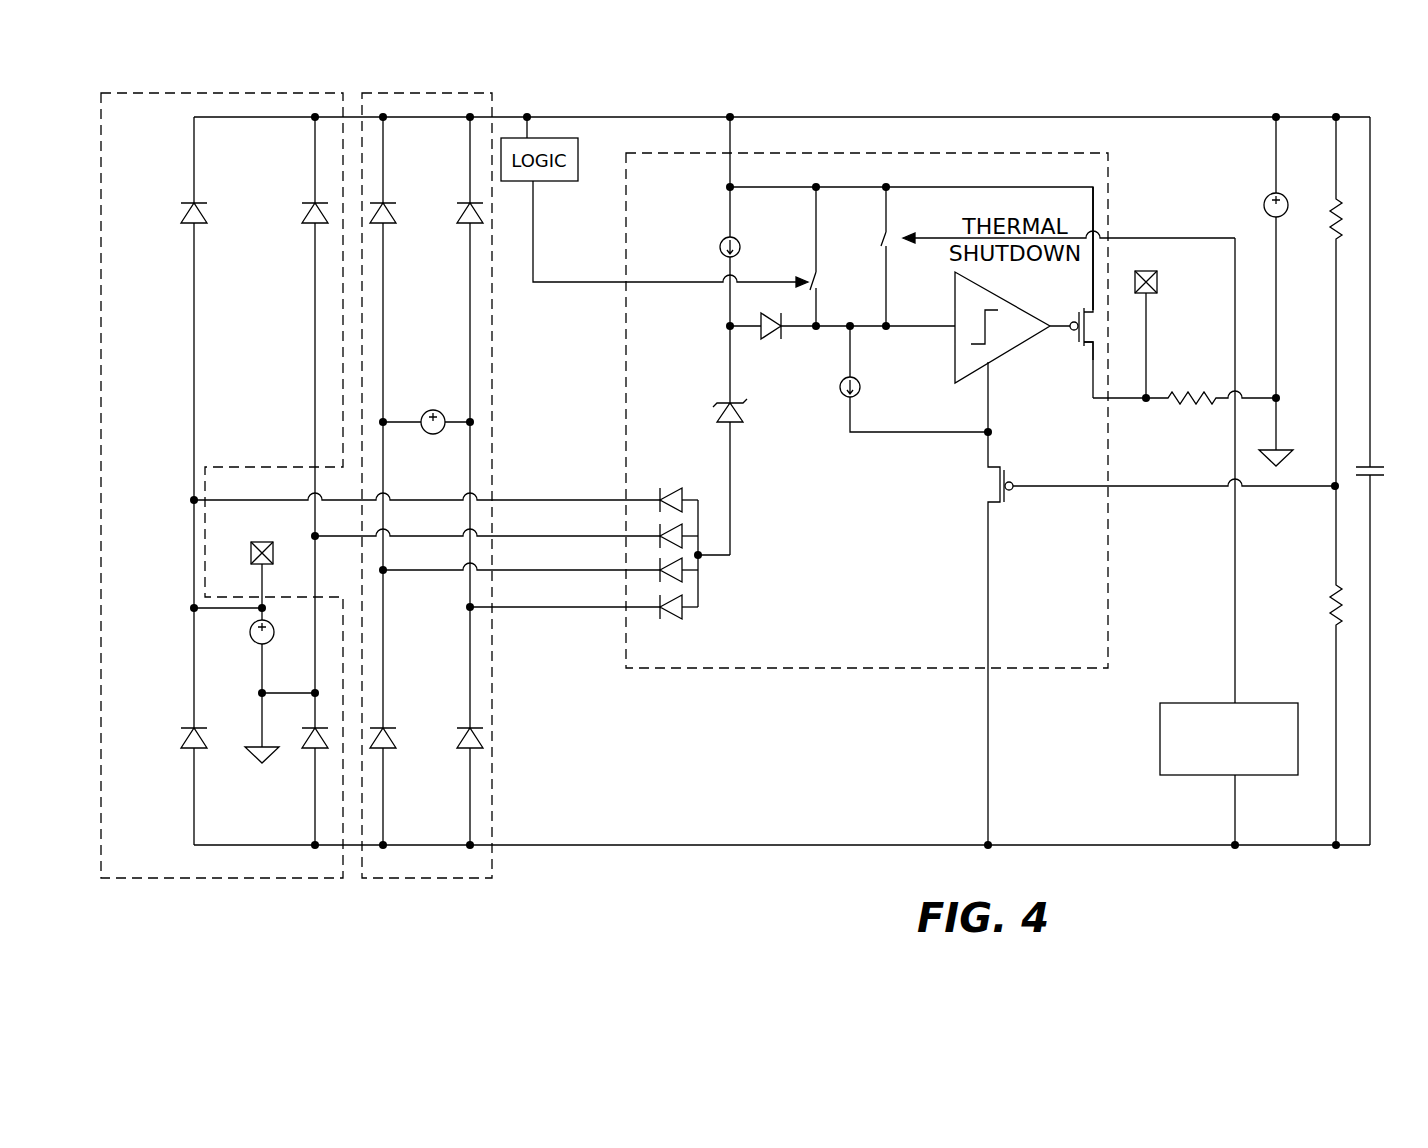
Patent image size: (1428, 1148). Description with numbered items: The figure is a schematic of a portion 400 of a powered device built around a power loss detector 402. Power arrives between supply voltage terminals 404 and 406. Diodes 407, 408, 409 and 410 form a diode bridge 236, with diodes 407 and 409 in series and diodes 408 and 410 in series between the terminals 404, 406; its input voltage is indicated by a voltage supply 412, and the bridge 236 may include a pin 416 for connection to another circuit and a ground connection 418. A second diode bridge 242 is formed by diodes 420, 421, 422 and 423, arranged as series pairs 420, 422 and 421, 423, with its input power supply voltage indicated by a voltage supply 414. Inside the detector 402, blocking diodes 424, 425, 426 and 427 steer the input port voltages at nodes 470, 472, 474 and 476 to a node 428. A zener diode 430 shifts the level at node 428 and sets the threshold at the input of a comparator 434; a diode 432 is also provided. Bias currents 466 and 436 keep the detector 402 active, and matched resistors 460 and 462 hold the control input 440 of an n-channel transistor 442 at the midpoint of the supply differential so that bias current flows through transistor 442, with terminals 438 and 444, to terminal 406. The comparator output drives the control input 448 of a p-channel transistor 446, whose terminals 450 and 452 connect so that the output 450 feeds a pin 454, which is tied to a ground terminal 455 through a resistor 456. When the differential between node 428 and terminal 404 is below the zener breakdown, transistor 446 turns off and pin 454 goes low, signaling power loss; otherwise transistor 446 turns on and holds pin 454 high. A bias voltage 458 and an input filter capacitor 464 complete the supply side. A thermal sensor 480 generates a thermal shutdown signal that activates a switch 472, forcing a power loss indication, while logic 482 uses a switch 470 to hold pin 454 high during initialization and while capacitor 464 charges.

The portion of a PD 400 is at (1095, 86).
The power loss detector 402 is at (822, 664).
The power supply voltage terminal 404 is at (255, 116).
The power supply voltage terminal 406 is at (757, 846).
The diode bridge 236 is at (190, 92).
The diode bridge 242 is at (406, 93).
The diode 407 is at (182, 214).
The diode 408 is at (304, 214).
The diode 409 is at (184, 745).
The diode 410 is at (322, 748).
The voltage supply 412 is at (254, 642).
The voltage supply 414 is at (424, 412).
The pin 416 is at (251, 553).
The ground connection 418 is at (262, 764).
The diode 420 is at (392, 214).
The diode 421 is at (459, 214).
The diode 422 is at (394, 745).
The diode 423 is at (482, 745).
The blocking diode 424 is at (674, 491).
The blocking diode 425 is at (684, 530).
The blocking diode 426 is at (700, 582).
The blocking diode 427 is at (672, 622).
The node 428 is at (700, 557).
The zener diode 430 is at (718, 410).
The diode 432 is at (781, 338).
The comparator 434 is at (955, 372).
The bias current 436 is at (840, 389).
The terminal 438 is at (992, 452).
The control input 440 is at (1040, 486).
The transistor 442 is at (1003, 505).
The terminal 444 is at (990, 525).
The transistor 446 is at (1070, 346).
The control input 448 is at (1068, 326).
The output 450 is at (1120, 400).
The terminal 452 is at (1095, 276).
The pin 454 is at (1158, 283).
The ground terminal 455 is at (1312, 438).
The resistor 456 is at (1210, 410).
The bias voltage 458 is at (1262, 203).
The matched resistor 460 is at (1330, 210).
The matched resistor 462 is at (1325, 626).
The input filter capacitor 464 is at (1385, 467).
The bias current 466 is at (740, 248).
The switch 470 is at (190, 501).
The switch 472 is at (313, 536).
The node 474 is at (384, 574).
The node 476 is at (472, 610).
The thermal sensor 480 is at (1160, 742).
The logic 482 is at (562, 182).